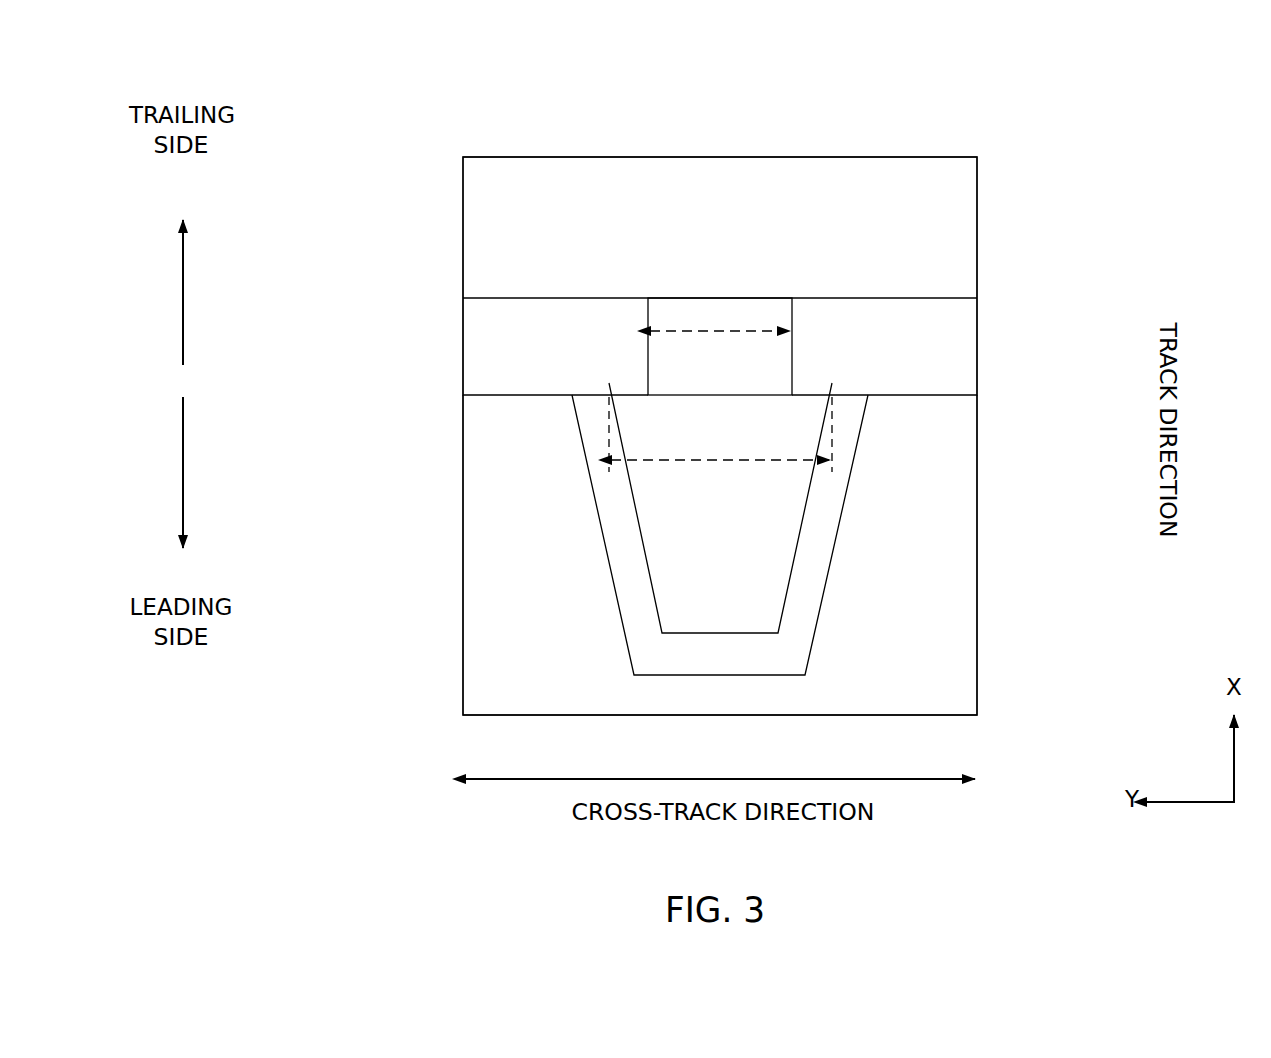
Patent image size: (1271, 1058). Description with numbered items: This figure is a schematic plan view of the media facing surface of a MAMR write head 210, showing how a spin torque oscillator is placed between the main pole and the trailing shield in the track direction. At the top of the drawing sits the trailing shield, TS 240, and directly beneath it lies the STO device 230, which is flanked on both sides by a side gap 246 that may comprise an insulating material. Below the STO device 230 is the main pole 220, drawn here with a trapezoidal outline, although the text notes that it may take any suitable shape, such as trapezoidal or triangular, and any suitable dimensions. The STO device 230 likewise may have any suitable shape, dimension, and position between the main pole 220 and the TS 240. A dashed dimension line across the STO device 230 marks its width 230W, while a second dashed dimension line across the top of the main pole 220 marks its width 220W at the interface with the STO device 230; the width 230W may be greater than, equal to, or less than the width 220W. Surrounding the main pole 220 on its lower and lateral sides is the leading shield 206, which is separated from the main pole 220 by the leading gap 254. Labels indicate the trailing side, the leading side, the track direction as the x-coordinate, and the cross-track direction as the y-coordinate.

The MAMR write head 210 is at (424, 68).
The trailing shield 240 is at (851, 241).
The side gap 246 is at (536, 356).
The STO device 230 is at (704, 367).
The width of the STO device 230W is at (712, 330).
The main pole 220 is at (704, 524).
The width of the main pole 220W is at (692, 460).
The leading gap 254 is at (685, 664).
The leading shield 206 is at (884, 568).